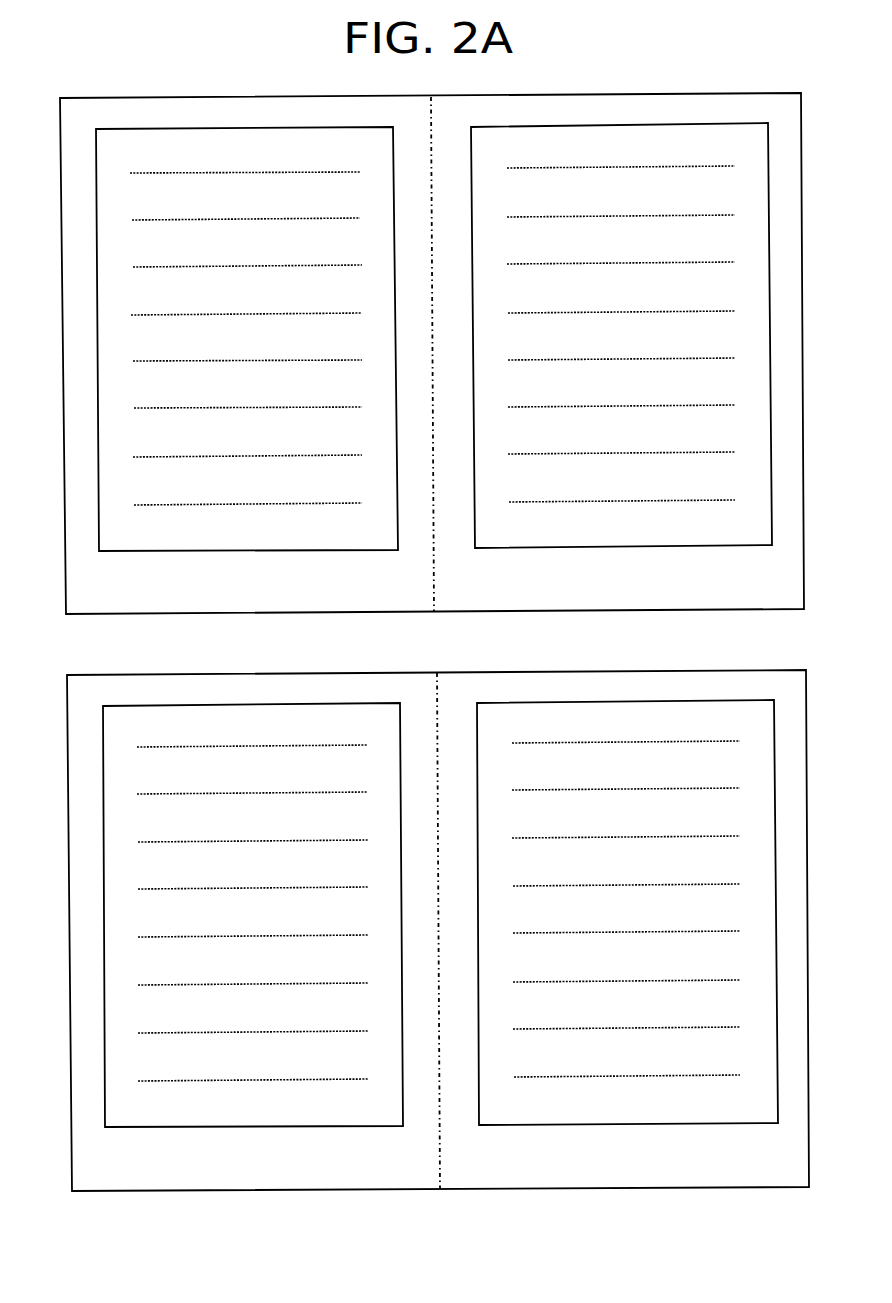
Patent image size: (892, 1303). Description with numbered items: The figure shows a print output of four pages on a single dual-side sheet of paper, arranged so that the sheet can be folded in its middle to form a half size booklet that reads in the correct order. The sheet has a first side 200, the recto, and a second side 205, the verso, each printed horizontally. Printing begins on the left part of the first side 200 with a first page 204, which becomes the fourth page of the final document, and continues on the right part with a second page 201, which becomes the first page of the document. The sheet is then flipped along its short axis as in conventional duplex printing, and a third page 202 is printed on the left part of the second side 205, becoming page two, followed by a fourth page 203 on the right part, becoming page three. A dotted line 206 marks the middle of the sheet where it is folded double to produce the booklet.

The first side 200 is at (272, 613).
The second page 201 is at (603, 547).
The third page 202 is at (200, 1126).
The fourth page 203 is at (612, 1123).
The first page 204 is at (195, 548).
The second side 205 is at (315, 1190).
The dotted line 206 is at (469, 643).